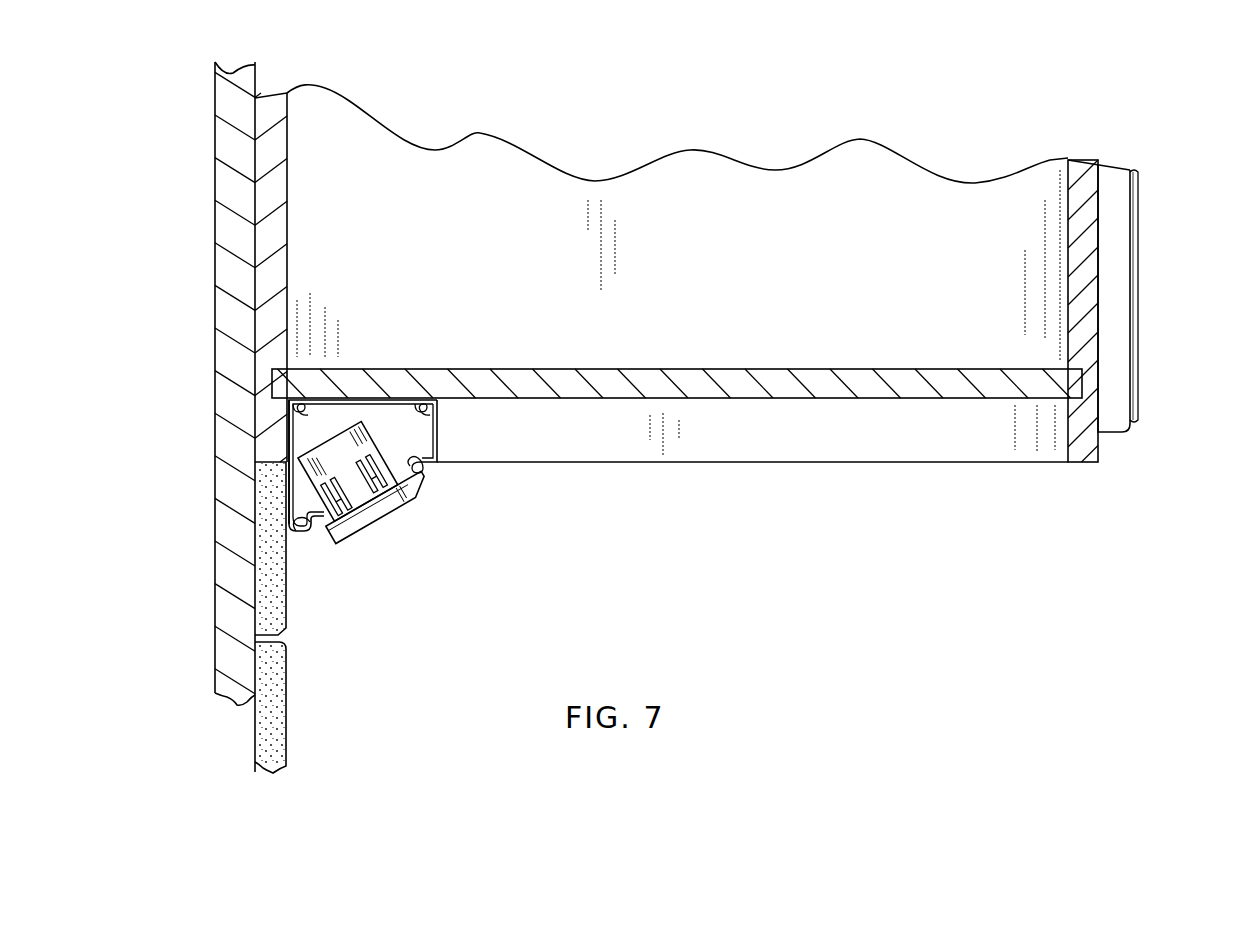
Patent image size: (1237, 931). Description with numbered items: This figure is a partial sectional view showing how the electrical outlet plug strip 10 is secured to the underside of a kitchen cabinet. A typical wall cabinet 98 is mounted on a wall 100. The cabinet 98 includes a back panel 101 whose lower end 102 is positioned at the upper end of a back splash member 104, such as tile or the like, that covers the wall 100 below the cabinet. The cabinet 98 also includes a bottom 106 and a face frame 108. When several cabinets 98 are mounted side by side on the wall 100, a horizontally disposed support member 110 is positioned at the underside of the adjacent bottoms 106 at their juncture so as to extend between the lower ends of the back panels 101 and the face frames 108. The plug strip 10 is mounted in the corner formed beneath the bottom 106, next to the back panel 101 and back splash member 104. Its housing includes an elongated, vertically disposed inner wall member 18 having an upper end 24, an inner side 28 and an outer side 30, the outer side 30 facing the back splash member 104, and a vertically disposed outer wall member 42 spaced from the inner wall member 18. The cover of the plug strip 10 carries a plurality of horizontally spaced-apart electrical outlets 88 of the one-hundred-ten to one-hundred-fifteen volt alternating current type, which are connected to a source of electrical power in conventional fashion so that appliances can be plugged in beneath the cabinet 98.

The plug strip 10 is at (354, 425).
The inner wall member 18 is at (354, 427).
The upper end 24 is at (318, 422).
The inner side 28 is at (291, 452).
The outer side 30 is at (290, 508).
The outer wall member 42 is at (443, 433).
The electrical outlets 88 is at (375, 515).
The wall cabinet 98 is at (343, 232).
The wall 100 is at (222, 564).
The back panel 101 is at (282, 300).
The lower end 102 is at (287, 462).
The back splash member 104 is at (293, 678).
The bottom 106 is at (730, 369).
The face frame 108 is at (1083, 303).
The support member 110 is at (868, 462).